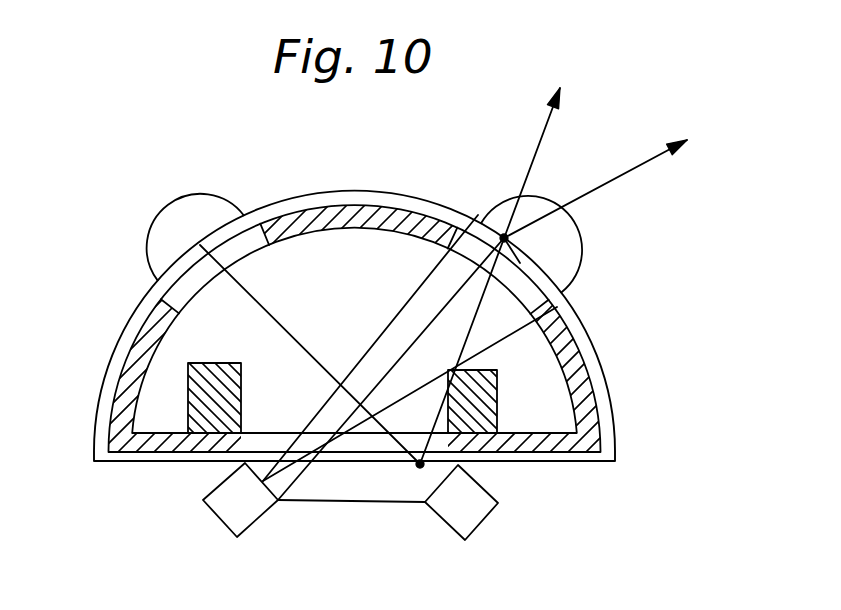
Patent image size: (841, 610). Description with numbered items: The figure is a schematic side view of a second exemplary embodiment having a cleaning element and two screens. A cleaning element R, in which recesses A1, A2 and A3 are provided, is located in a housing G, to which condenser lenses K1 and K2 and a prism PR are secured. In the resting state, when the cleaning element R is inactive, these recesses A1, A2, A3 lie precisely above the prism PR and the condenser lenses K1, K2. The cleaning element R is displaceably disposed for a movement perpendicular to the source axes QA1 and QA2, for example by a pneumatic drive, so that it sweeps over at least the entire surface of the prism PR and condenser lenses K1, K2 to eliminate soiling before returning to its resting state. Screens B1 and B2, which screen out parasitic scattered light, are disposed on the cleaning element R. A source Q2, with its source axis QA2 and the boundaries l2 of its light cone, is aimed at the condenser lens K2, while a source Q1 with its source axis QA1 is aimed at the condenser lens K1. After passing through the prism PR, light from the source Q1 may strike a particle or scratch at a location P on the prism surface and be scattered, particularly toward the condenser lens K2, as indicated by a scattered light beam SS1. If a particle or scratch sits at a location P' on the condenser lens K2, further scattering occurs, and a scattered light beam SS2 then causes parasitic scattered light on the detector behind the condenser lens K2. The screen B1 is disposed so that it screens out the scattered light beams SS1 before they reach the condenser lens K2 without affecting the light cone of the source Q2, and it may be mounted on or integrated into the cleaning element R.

The housing G is at (98, 400).
The cleaning element R is at (357, 207).
The recess A1 is at (168, 296).
The recess A2 is at (560, 318).
The recess A3 is at (337, 447).
The condenser lens K1 is at (190, 204).
The condenser lens K2 is at (585, 258).
The screen B1 is at (487, 421).
The screen B2 is at (203, 410).
The source Q1 is at (475, 513).
The source Q2 is at (217, 520).
The prism PR is at (348, 497).
The location P is at (409, 500).
The location P' is at (498, 200).
The source axis QA1 is at (243, 287).
The source axis QA2 is at (440, 316).
The boundaries of the light cone l2 is at (430, 273).
The scattered light beam SS1 is at (547, 127).
The scattered light beam SS2 is at (620, 177).